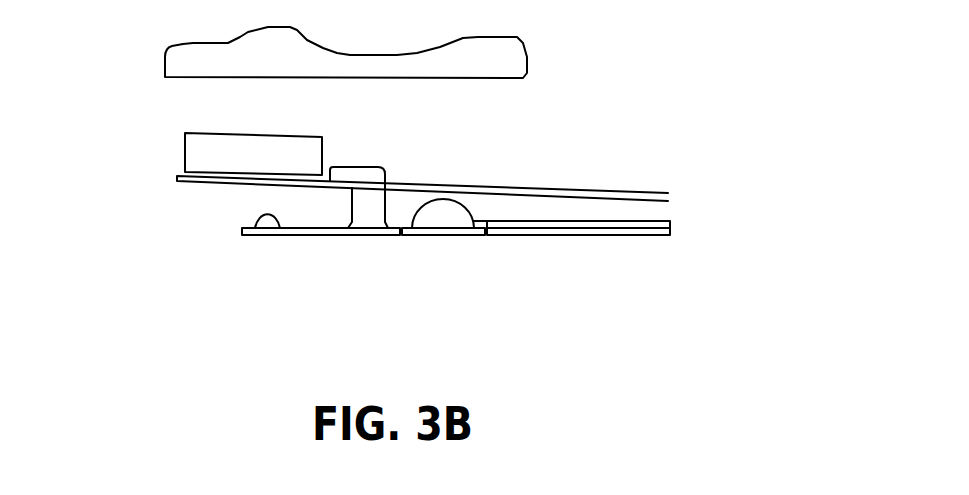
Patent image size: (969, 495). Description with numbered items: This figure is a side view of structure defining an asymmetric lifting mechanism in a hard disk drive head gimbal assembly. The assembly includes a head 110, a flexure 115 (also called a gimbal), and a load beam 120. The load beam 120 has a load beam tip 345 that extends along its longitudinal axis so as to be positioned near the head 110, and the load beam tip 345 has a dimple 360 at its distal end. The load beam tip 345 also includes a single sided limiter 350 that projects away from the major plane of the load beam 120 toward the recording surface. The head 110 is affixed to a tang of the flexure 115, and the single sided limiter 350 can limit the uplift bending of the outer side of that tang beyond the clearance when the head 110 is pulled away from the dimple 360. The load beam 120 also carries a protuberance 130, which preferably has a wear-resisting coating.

The head 110 is at (210, 143).
The flexure 115 is at (183, 178).
The load beam 120 is at (645, 233).
The protuberance 130 is at (440, 218).
The load beam tip 345 is at (320, 230).
The single sided limiter 350 is at (347, 170).
The dimple 360 is at (260, 220).